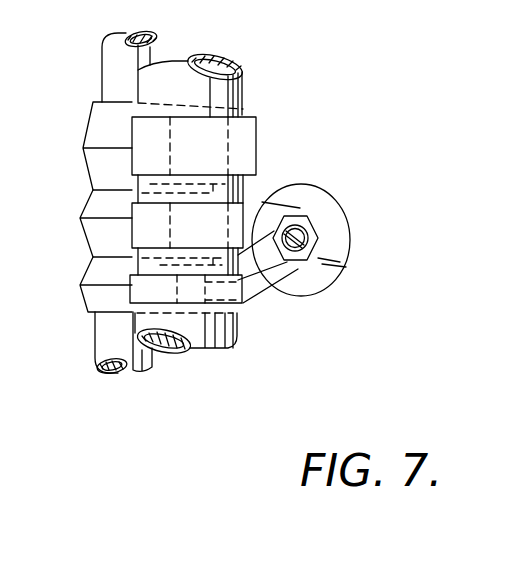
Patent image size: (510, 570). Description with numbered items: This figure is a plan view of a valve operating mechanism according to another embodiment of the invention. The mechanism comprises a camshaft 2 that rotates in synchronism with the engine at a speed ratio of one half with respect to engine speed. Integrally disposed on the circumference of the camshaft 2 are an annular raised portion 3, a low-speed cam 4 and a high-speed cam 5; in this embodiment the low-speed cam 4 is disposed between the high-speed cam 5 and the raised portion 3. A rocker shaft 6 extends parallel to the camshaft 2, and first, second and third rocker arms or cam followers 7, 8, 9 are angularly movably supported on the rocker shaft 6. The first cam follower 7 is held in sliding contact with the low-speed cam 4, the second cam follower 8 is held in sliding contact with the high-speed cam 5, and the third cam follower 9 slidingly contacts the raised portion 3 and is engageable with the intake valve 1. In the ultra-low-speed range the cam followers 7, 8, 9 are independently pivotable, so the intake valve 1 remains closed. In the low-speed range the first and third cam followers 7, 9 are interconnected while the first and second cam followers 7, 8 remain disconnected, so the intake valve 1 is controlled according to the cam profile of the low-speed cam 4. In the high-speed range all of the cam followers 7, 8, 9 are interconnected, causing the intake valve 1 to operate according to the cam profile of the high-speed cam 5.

The intake valve 1 is at (328, 189).
The camshaft 2 is at (240, 93).
The annular raised portion 3 is at (186, 288).
The low-speed cam 4 is at (203, 238).
The high-speed cam 5 is at (204, 152).
The rocker shaft 6 is at (102, 340).
The first cam follower 7 is at (90, 207).
The second cam follower 8 is at (88, 138).
The third cam follower 9 is at (92, 273).